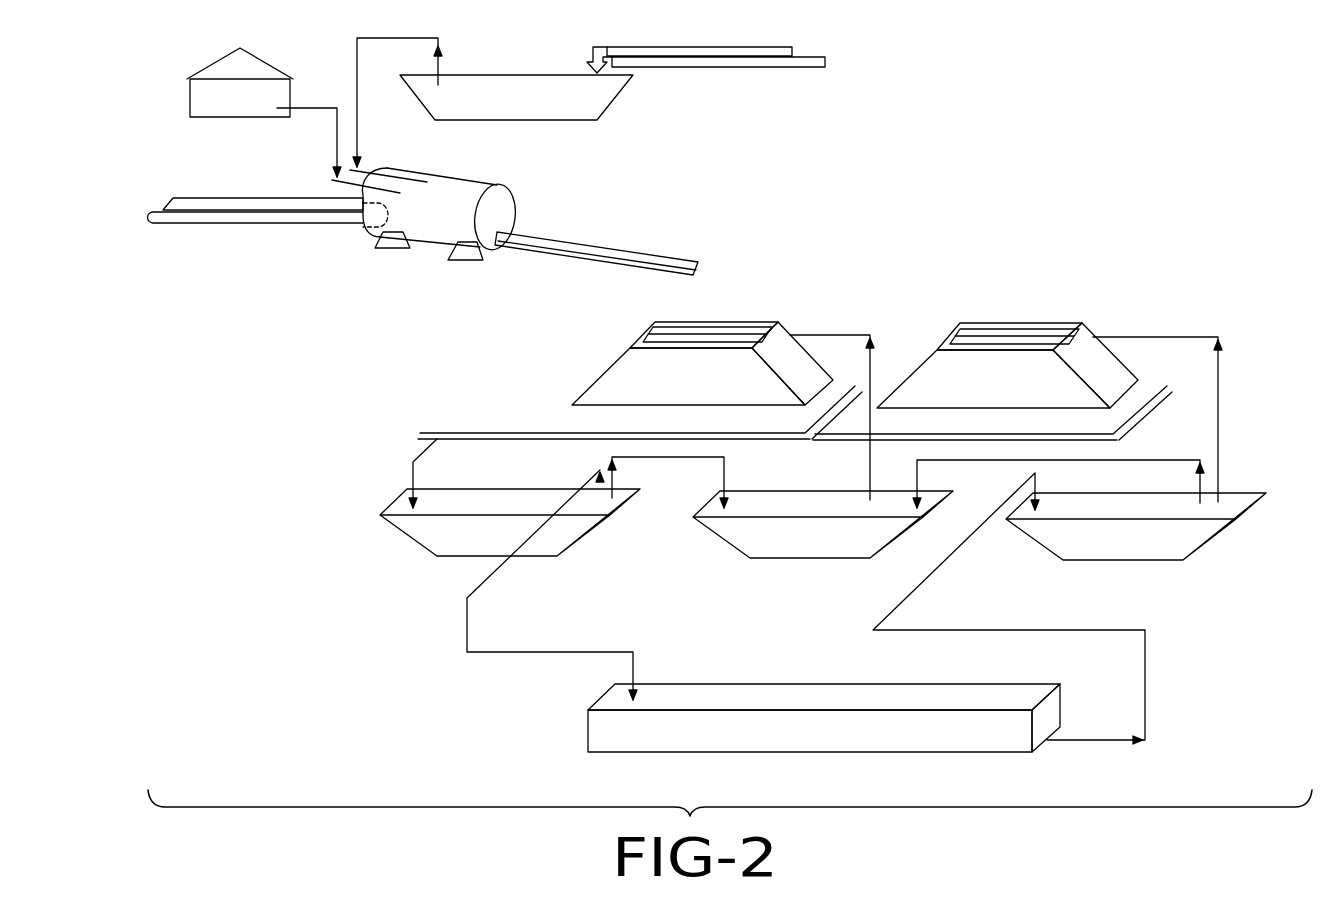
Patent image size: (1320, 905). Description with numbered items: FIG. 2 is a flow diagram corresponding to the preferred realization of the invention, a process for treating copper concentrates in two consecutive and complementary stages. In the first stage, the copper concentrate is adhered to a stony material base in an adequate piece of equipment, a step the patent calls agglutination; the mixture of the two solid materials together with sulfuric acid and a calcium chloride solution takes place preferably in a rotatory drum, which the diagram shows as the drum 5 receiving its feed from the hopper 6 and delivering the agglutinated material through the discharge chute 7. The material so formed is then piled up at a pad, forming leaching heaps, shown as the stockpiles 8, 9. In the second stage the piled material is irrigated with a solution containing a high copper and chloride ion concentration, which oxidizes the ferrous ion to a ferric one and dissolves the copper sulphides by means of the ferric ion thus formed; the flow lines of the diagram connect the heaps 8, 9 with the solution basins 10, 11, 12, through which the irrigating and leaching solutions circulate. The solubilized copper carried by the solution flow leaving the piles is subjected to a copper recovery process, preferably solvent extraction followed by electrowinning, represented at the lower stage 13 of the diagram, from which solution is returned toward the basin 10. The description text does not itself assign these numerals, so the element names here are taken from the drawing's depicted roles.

The rotary mixing drum 5 is at (426, 190).
The feed hopper 6 is at (540, 96).
The discharge chute 7 is at (596, 242).
The stockpile 8 is at (702, 344).
The stockpile 9 is at (1007, 347).
The basin 10 is at (1136, 547).
The basin 11 is at (823, 545).
The basin 12 is at (510, 543).
The curing bed 13 is at (824, 739).